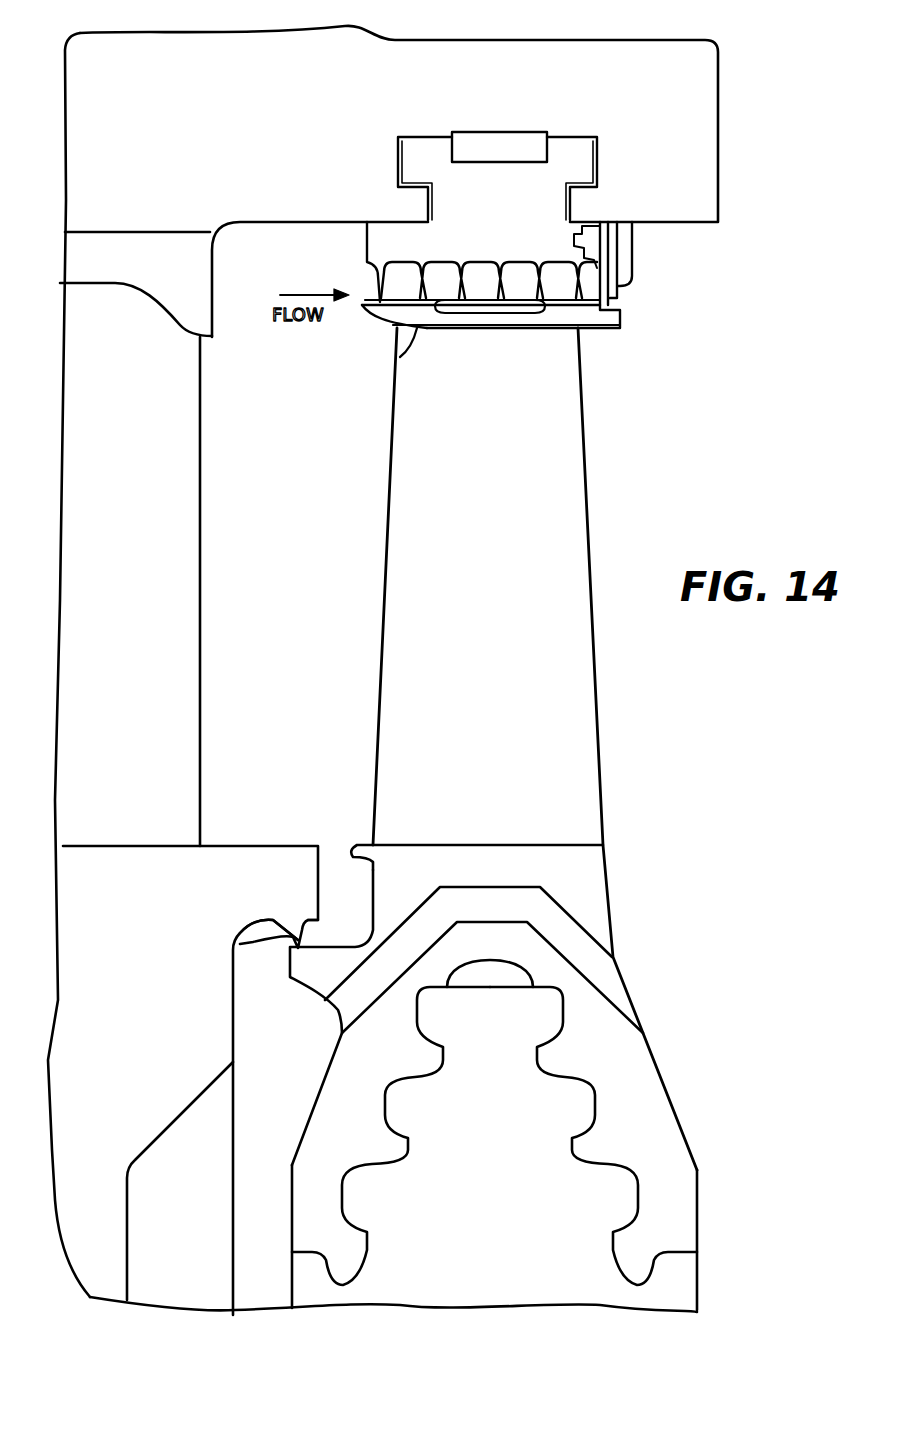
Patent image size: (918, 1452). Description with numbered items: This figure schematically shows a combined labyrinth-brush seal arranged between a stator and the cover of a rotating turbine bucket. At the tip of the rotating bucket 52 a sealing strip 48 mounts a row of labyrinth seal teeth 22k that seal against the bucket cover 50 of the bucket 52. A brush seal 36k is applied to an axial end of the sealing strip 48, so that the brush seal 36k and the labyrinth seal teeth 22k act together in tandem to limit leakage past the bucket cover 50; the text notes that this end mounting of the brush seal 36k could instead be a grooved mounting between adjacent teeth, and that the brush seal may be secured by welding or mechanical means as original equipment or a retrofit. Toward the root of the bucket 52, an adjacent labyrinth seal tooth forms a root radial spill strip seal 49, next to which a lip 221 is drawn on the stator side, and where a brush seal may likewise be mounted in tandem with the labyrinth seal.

The sealing strip 48 is at (520, 226).
The labyrinth seal teeth 22k is at (375, 288).
The brush seal 36k is at (622, 286).
The bucket cover 50 is at (398, 357).
The bucket 52 is at (399, 541).
The root radial spill strip seal 49 is at (276, 898).
The seal lip 221 is at (232, 948).